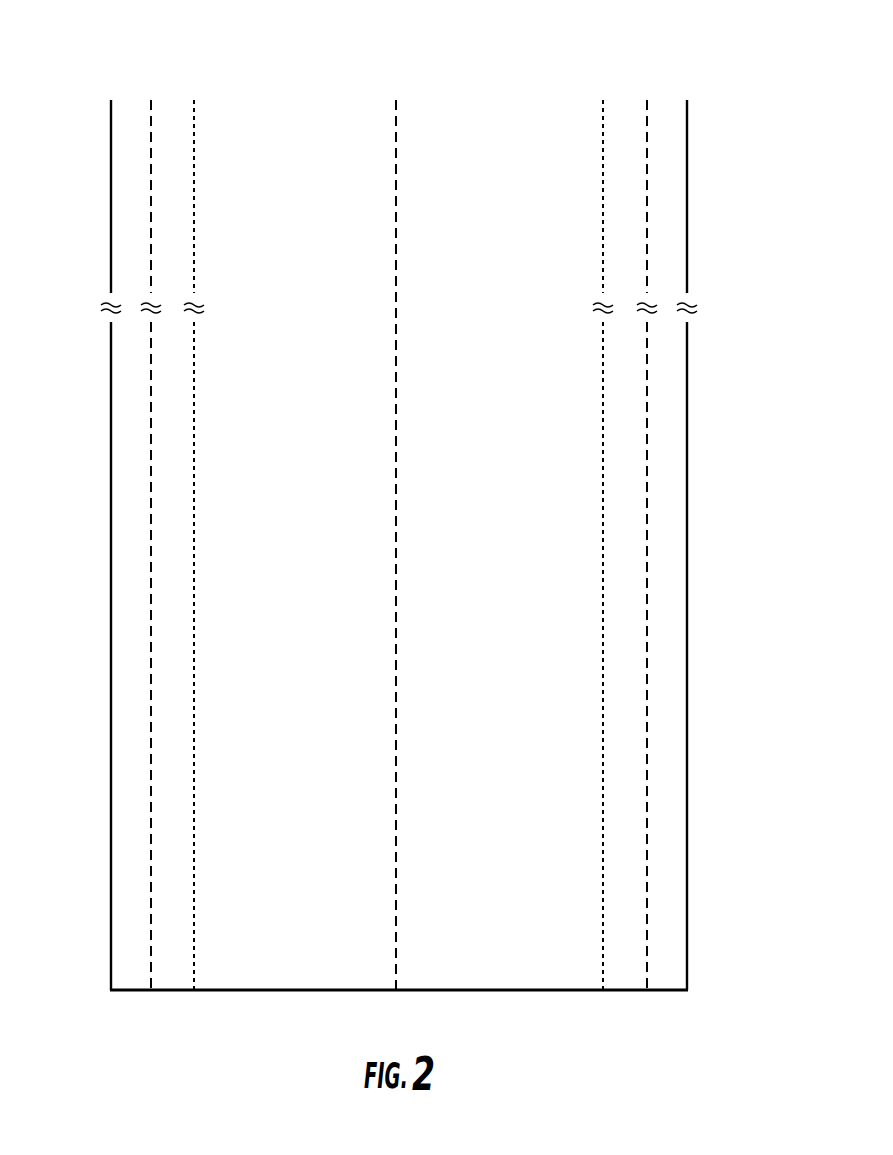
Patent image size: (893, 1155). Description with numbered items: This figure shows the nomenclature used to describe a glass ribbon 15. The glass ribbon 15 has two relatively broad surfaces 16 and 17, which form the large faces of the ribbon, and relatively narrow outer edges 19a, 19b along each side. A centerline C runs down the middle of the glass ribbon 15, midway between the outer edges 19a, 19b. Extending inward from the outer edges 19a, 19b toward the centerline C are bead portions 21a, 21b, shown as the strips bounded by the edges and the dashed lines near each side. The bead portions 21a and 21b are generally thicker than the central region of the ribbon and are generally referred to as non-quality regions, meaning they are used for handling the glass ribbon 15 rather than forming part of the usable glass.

The glass ribbon 15 is at (720, 212).
The broad surface 16 is at (318, 621).
The broad surface 17 is at (100, 613).
The outer edge 19a is at (110, 861).
The outer edge 19b is at (688, 866).
The bead portion 21a is at (194, 1001).
The bead portion 21b is at (688, 1001).
The centerline C is at (397, 287).